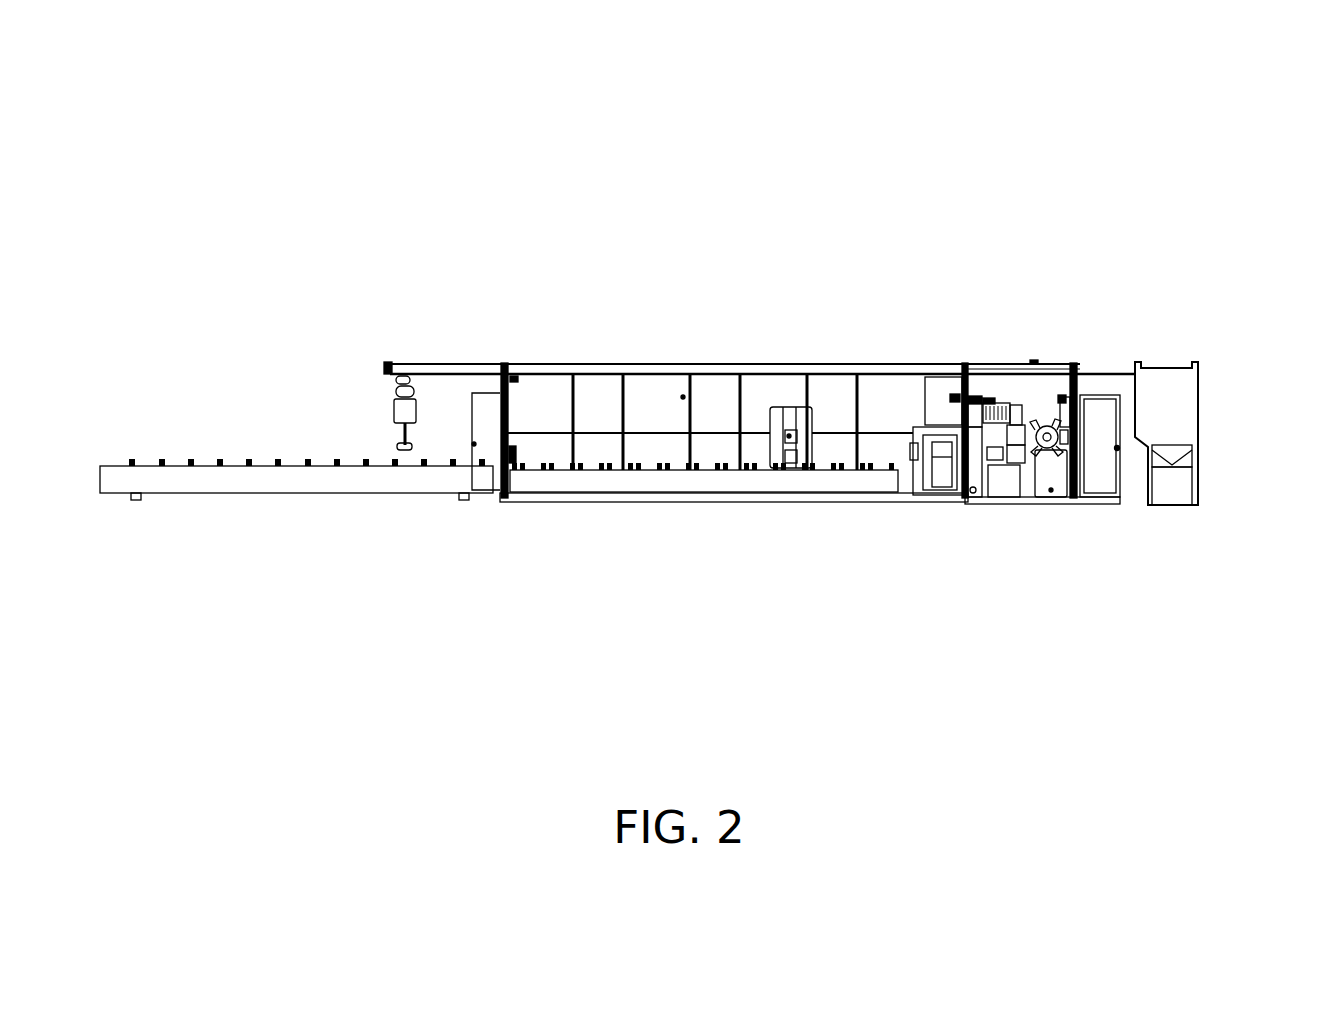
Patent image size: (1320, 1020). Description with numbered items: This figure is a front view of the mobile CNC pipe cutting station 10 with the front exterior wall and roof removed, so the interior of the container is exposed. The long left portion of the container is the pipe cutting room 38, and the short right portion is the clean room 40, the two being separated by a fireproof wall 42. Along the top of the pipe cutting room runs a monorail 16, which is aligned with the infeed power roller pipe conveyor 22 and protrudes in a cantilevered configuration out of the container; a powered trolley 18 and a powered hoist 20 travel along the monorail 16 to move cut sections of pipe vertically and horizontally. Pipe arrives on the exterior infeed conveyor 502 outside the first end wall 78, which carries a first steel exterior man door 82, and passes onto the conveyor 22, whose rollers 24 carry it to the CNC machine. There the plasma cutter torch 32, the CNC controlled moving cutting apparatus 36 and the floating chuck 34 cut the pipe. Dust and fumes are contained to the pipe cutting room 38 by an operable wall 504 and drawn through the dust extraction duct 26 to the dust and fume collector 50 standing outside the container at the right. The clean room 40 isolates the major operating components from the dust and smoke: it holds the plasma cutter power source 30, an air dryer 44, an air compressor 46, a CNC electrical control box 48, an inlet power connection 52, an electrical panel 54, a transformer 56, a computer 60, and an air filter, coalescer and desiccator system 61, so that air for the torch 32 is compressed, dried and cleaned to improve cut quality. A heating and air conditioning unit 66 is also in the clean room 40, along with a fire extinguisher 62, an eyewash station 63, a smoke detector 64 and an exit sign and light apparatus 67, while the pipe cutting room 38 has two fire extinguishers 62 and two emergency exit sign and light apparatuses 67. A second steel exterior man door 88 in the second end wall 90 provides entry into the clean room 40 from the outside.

The station 10 is at (535, 212).
The monorail 16 is at (742, 306).
The powered trolley 18 is at (303, 323).
The powered hoist 20 is at (306, 391).
The infeed power roller pipe conveyor 22 is at (734, 544).
The rollers 24 is at (704, 547).
The dust extraction duct 26 is at (1042, 239).
The power source 30 is at (965, 347).
The plasma cutter torch 32 is at (741, 382).
The floating chuck 34 is at (916, 482).
The CNC controlled moving cutting apparatus 36 is at (731, 547).
The pipe cutting room 38 is at (683, 208).
The clean room 40 is at (927, 183).
The fireproof wall 42 is at (926, 368).
The air dryer 44 is at (1128, 272).
The air compressor 46 is at (1096, 539).
The CNC electrical control box 48 is at (993, 545).
The dust and fume collector 50 is at (1217, 419).
The inlet power connection 52 is at (1079, 528).
The electrical panel 54 is at (1084, 557).
The transformer 56 is at (1067, 586).
The computer 60 is at (1040, 573).
The air filter, coalescer and desiccator system 61 is at (1022, 275).
The fire extinguisher 62 is at (553, 495).
The eyewash station 63 is at (1143, 406).
The smoke detector 64 is at (1090, 277).
The heating and air conditioning unit 66 is at (1129, 320).
The exit sign and light apparatus 67 is at (879, 322).
The first end wall 78 is at (472, 389).
The first steel exterior man door 82 is at (390, 501).
The second steel exterior man door 88 is at (1200, 369).
The second end wall 90 is at (1164, 374).
The exterior infeed conveyor 502 is at (296, 523).
The operable wall 504 is at (710, 392).